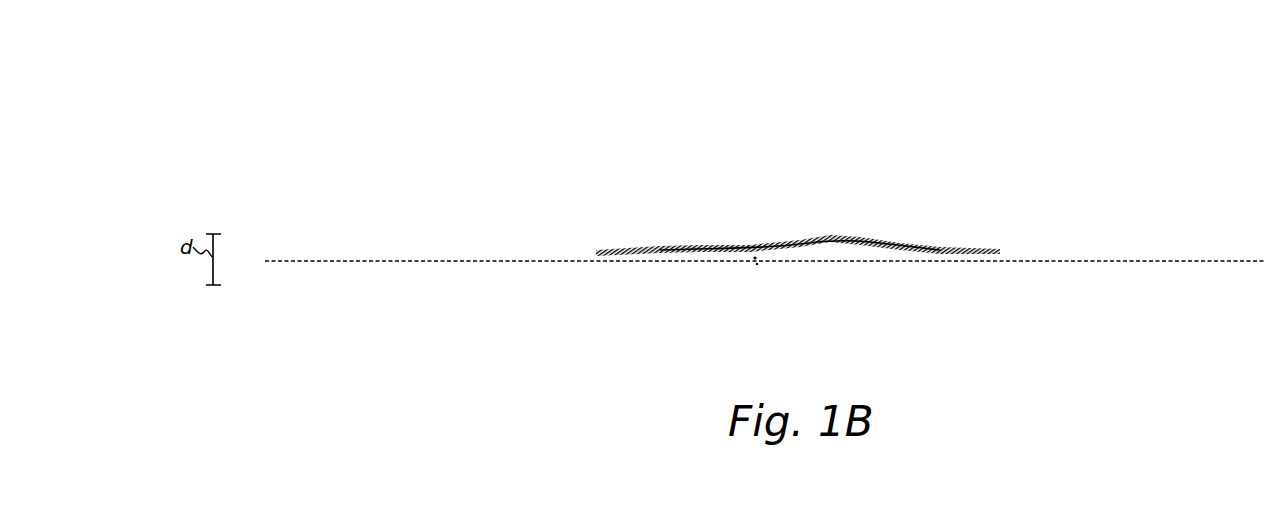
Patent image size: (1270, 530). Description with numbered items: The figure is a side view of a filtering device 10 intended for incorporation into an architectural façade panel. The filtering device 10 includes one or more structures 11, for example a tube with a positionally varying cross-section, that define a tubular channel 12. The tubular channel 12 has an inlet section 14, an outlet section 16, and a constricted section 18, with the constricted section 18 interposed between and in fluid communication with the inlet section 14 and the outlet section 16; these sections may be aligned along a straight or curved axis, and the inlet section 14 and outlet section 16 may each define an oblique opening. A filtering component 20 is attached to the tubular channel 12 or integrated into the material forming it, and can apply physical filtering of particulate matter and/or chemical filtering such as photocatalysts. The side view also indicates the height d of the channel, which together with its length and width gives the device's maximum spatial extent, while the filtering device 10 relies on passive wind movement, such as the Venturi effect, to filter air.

The filtering device 10 is at (765, 192).
The structure 11 is at (765, 308).
The tubular channel 12 is at (687, 144).
The inlet section 14 is at (969, 250).
The outlet section 16 is at (584, 246).
The constricted section 18 is at (783, 221).
The filtering component 20 is at (748, 264).